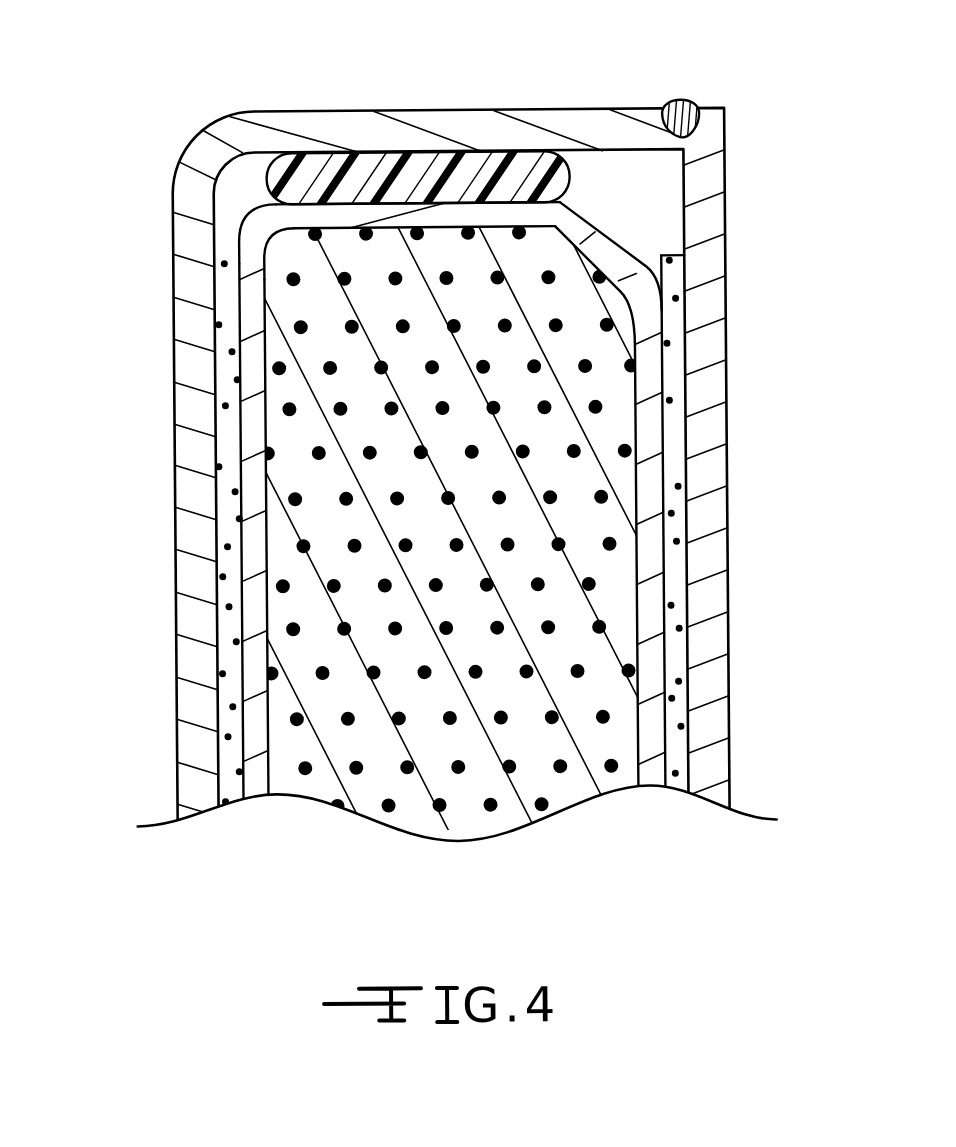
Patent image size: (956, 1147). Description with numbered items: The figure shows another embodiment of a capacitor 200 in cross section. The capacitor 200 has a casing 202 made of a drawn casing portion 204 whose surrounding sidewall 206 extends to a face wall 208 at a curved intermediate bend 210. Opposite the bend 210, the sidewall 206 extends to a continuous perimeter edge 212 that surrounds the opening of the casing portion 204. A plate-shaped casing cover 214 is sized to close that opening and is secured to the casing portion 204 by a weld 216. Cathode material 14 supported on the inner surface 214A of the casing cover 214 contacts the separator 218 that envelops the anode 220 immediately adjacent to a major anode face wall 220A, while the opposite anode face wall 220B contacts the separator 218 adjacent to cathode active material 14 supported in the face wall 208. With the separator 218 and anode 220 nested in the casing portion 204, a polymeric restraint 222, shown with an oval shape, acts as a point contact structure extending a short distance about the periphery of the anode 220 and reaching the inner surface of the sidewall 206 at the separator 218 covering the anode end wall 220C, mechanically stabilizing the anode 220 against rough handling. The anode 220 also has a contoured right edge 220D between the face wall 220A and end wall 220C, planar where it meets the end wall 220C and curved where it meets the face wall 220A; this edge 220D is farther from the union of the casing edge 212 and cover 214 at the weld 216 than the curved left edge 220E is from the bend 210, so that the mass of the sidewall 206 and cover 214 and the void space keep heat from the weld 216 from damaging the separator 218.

The capacitor 200 is at (778, 95).
The casing 202 is at (148, 152).
The drawn casing portion 204 is at (174, 258).
The sidewall 206 is at (335, 131).
The face wall 208 is at (187, 495).
The curved intermediate bend 210 is at (190, 150).
The continuous perimeter edge 212 is at (727, 144).
The casing cover 214 is at (727, 220).
The inner surface 214A is at (670, 190).
The weld 216 is at (687, 97).
The separator 218 is at (650, 433).
The anode 220 is at (600, 685).
The major anode face wall 220A is at (638, 620).
The opposite anode face wall 220B is at (267, 614).
The anode end wall 220C is at (438, 216).
The contoured right edge 220D is at (648, 268).
The curved left edge 220E is at (175, 204).
The polymeric restraint 222 is at (388, 165).
The cathode material 14 is at (227, 432).